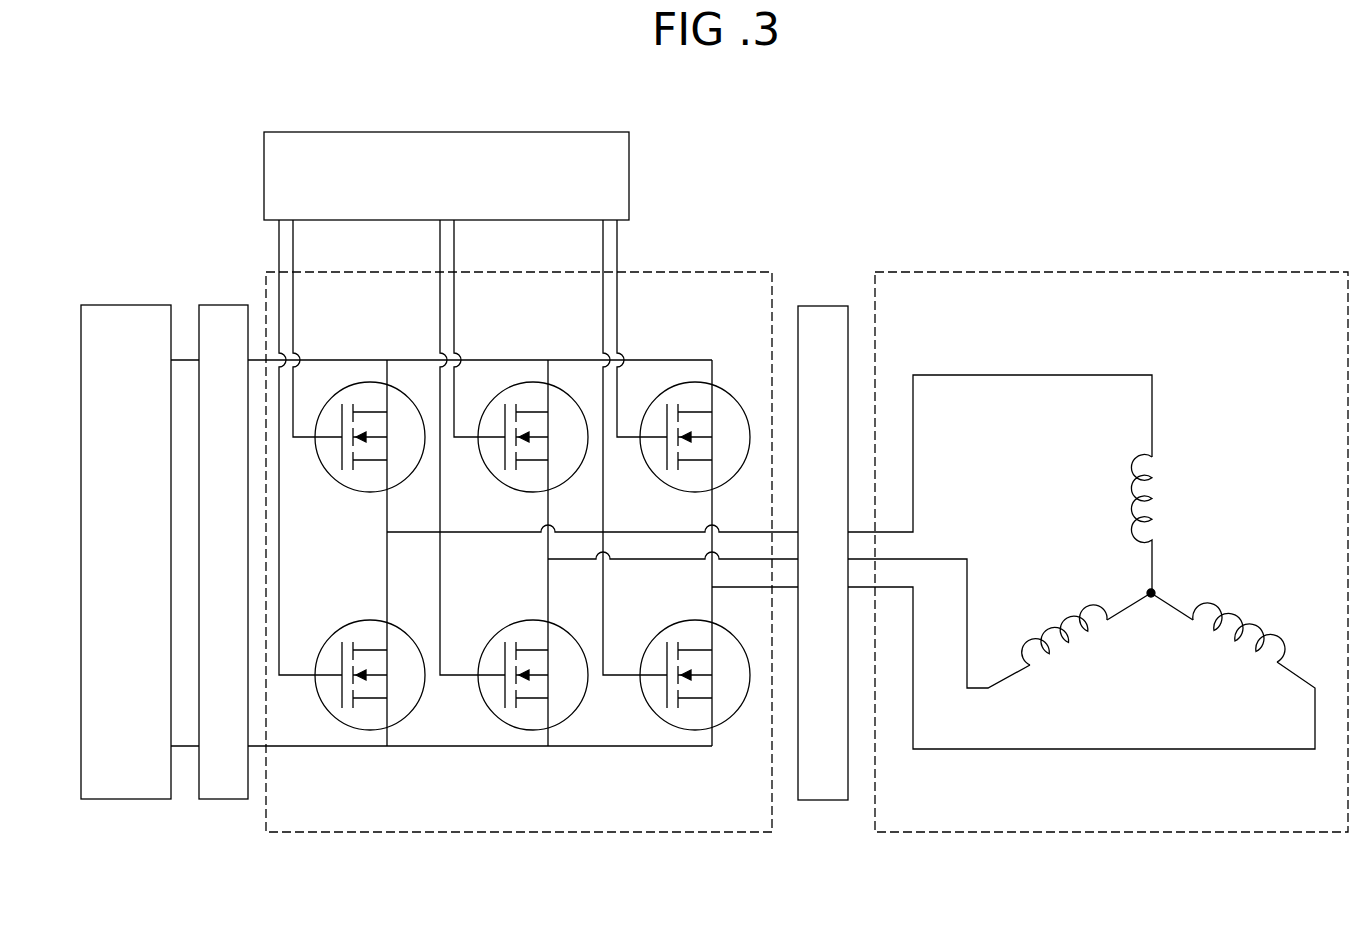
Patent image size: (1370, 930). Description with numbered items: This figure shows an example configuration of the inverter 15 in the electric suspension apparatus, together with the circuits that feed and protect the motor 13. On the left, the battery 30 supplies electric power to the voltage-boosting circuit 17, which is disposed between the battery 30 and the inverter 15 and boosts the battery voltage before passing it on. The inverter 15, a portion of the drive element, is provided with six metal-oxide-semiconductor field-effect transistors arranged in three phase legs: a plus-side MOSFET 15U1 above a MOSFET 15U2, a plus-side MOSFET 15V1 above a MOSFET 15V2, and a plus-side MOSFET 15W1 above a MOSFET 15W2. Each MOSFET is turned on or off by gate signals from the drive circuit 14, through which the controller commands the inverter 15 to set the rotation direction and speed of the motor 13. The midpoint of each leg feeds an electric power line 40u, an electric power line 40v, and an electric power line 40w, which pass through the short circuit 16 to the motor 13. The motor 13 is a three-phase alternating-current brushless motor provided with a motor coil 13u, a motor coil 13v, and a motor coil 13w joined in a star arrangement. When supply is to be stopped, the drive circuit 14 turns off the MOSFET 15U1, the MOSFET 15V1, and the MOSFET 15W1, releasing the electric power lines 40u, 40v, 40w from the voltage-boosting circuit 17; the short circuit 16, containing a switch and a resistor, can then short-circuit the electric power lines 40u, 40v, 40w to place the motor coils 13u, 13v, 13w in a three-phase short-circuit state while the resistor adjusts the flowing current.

The motor 13 is at (1240, 271).
The motor coil 13u is at (1126, 465).
The motor coil 13v is at (1065, 672).
The motor coil 13w is at (1243, 613).
The drive circuit 14 is at (629, 178).
The inverter 15 is at (728, 271).
The MOSFET 15U1 is at (330, 474).
The MOSFET 15U2 is at (330, 633).
The MOSFET 15V1 is at (492, 474).
The MOSFET 15V2 is at (490, 633).
The MOSFET 15W1 is at (654, 474).
The MOSFET 15W2 is at (654, 633).
The short circuit 16 is at (819, 306).
The voltage-boosting circuit 17 is at (222, 305).
The battery 30 is at (122, 305).
The electric power line 40u is at (952, 375).
The electric power line 40v is at (968, 582).
The electric power line 40w is at (990, 752).